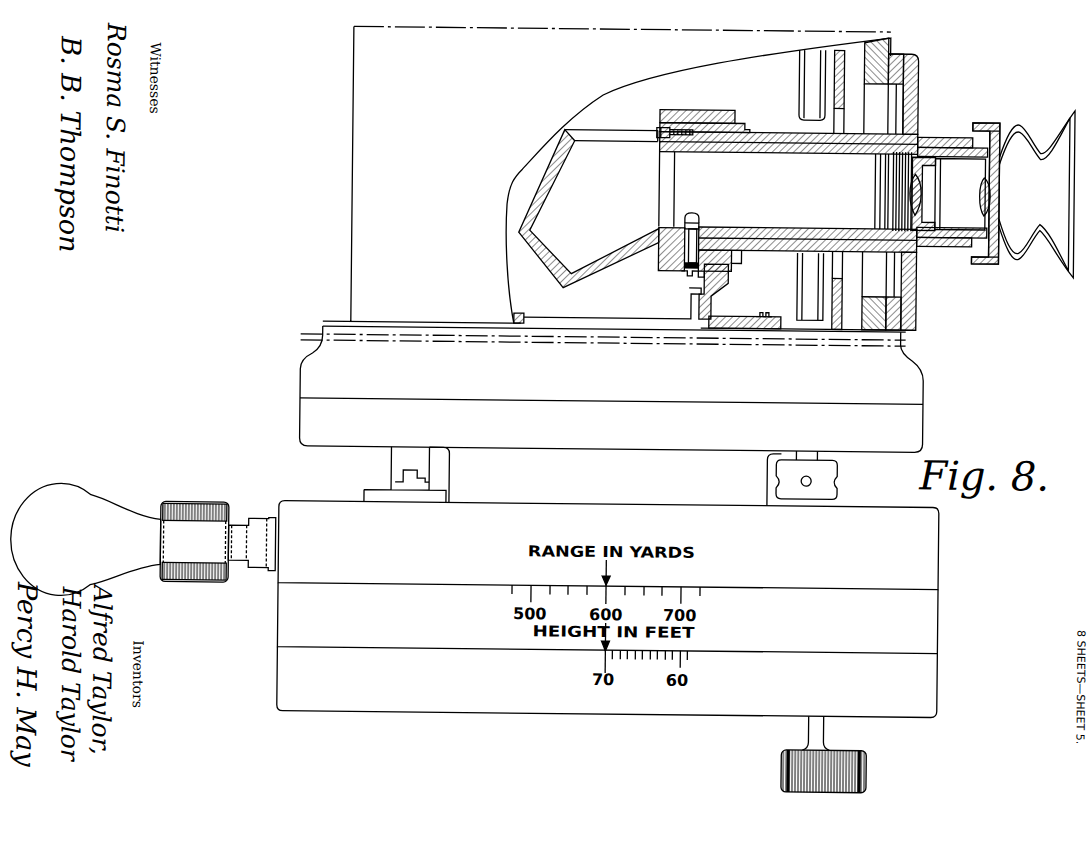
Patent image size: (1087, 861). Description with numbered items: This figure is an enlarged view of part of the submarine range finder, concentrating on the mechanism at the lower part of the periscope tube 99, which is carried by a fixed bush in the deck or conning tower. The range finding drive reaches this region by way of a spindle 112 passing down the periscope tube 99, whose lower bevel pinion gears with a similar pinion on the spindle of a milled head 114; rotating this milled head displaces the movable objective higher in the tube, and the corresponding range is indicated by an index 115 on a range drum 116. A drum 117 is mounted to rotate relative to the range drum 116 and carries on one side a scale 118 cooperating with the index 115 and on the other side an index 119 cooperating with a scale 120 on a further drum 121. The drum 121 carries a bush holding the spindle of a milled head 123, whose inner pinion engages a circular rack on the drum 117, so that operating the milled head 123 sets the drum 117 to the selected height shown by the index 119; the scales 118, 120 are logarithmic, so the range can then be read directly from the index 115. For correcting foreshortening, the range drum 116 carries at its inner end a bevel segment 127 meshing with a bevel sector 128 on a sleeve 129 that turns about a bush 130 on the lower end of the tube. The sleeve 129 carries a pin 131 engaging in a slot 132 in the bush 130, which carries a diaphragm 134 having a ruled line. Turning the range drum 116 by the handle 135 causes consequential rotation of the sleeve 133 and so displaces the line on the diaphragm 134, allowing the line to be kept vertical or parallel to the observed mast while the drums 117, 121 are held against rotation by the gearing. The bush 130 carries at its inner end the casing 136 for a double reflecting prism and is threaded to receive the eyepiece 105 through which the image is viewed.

The lower part of periscope tube 99 is at (613, 239).
The eyepiece 105 is at (1042, 263).
The spindle 112 is at (402, 459).
The milled head 114 is at (187, 581).
The index 115 is at (613, 584).
The range drum 116 is at (920, 552).
The drum 117 is at (922, 627).
The scale 118 is at (685, 598).
The index 119 is at (607, 648).
The scale 120 is at (681, 667).
The drum 121 is at (918, 679).
The milled head 123 is at (800, 767).
The bevel segment 127 is at (691, 302).
The bevel sector 128 is at (728, 282).
The sleeve 129 is at (707, 109).
The bush 130 is at (910, 101).
The pin 131 is at (698, 223).
The slot 132 is at (695, 212).
The sleeve 133 is at (783, 229).
The diaphragm 134 is at (870, 193).
The handle 135 is at (85, 540).
The casing 136 is at (571, 128).